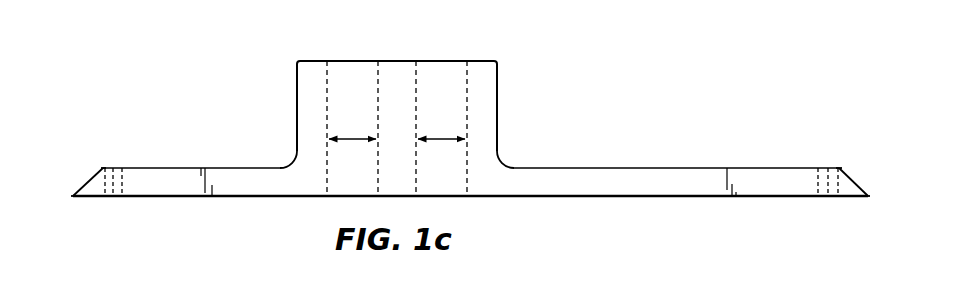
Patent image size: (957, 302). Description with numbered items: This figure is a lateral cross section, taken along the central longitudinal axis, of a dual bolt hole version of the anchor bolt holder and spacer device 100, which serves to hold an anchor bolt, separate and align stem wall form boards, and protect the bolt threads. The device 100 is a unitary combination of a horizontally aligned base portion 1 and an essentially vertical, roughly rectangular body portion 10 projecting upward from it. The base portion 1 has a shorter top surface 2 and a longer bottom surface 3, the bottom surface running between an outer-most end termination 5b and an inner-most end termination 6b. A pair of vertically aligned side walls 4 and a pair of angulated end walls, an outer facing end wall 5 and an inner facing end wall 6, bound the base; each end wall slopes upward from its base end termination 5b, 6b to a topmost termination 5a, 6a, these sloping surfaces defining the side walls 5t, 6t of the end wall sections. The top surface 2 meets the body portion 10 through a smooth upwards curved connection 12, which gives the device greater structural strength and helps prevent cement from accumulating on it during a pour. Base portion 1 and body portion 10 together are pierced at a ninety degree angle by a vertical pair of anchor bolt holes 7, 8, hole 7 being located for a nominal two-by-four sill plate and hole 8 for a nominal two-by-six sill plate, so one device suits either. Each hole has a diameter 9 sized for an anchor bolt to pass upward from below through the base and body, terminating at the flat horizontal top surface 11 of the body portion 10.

The combination anchor bolt holder, form board separation alignment and retention, a 100 is at (474, 129).
The base portion 1 is at (165, 146).
The top surface 2 is at (625, 166).
The bottom surface 3 is at (638, 199).
The base section side walls 4 is at (533, 177).
The outer facing end wall 5 is at (92, 176).
The topmost termination 5a is at (103, 166).
The outer-most end termination 5b is at (73, 198).
The side wall 5t is at (97, 198).
The inner facing end wall 6 is at (857, 172).
The topmost termination 6a is at (841, 166).
The inner-most end termination 6b is at (870, 198).
The side wall 6t is at (848, 188).
The anchor bolt hole 7 is at (352, 128).
The anchor bolt hole 8 is at (441, 128).
The diameter 9 is at (352, 141).
The body portion 10 is at (379, 99).
The top surface 11 is at (396, 57).
The upwards curved connection 12 is at (289, 161).